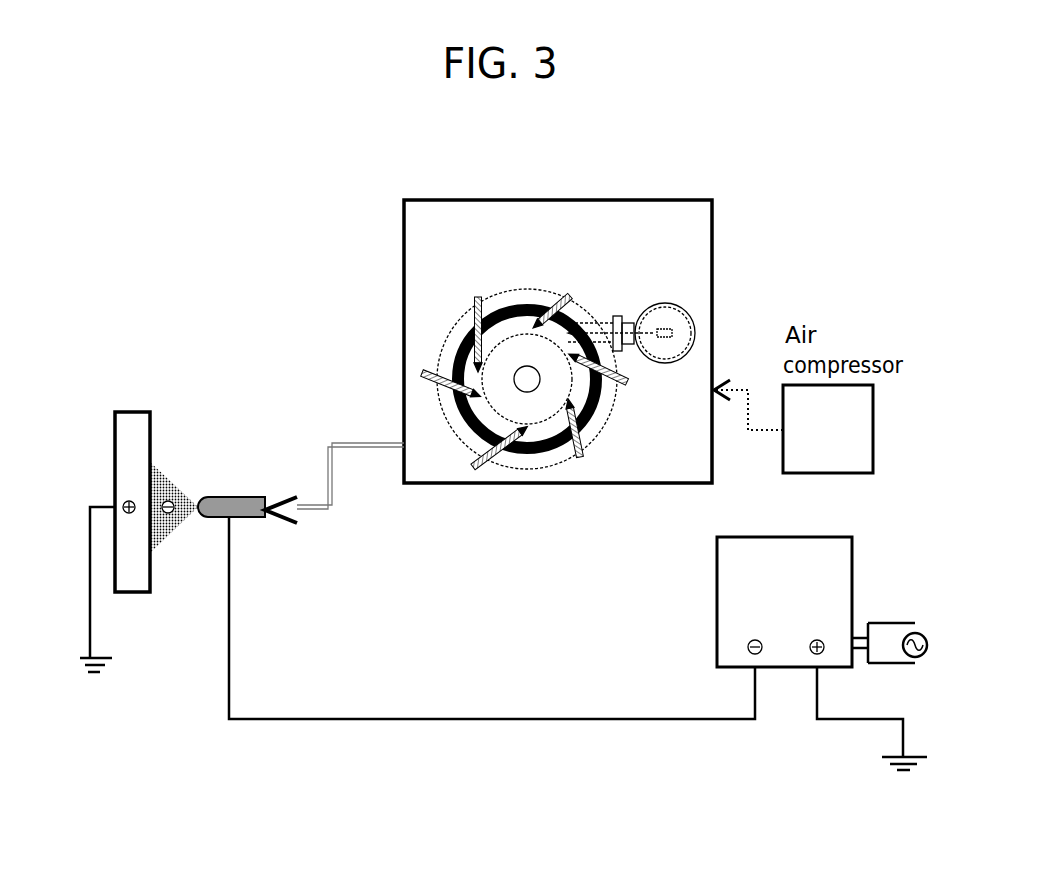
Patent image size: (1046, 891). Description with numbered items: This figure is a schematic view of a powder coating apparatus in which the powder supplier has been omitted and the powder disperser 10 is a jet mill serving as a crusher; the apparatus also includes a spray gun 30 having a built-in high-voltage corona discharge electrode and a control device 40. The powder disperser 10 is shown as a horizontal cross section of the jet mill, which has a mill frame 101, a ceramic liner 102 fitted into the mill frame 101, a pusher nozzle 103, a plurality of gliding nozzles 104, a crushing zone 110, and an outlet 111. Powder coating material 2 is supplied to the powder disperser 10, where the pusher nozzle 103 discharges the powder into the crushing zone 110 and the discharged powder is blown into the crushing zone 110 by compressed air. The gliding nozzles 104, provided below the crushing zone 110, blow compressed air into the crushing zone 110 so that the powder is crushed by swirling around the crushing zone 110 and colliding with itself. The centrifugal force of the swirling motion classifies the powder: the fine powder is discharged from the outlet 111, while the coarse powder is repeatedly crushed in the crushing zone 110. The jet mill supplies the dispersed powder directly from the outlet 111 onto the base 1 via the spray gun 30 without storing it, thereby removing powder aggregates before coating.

The base 1 is at (130, 412).
The powder coating material 2 is at (180, 497).
The spray gun 30 is at (237, 497).
The powder disperser 10 is at (477, 199).
The control device 40 is at (733, 535).
The mill frame 101 is at (590, 432).
The ceramic liner 102 is at (592, 413).
The pusher nozzle 103 is at (662, 325).
The gliding nozzles 104 is at (533, 328).
The crushing zone 110 is at (472, 330).
The outlet 111 is at (525, 392).